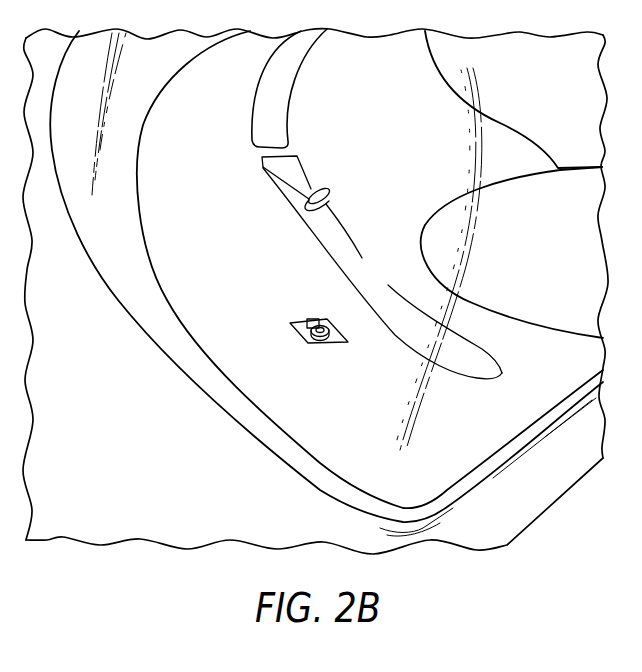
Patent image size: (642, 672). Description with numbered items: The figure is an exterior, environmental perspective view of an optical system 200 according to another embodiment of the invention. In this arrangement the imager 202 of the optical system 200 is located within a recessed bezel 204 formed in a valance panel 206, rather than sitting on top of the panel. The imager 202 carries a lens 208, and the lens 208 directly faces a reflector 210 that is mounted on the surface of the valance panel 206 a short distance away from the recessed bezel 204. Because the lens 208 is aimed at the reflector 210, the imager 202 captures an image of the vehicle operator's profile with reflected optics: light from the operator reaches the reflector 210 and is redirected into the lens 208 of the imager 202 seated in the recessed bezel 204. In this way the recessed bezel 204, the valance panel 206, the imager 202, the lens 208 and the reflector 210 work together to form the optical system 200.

The optical system 200 is at (376, 160).
The imager 202 is at (307, 343).
The recessed bezel 204 is at (300, 313).
The valance panel 206 is at (359, 428).
The lens 208 is at (320, 323).
The reflector 210 is at (262, 166).